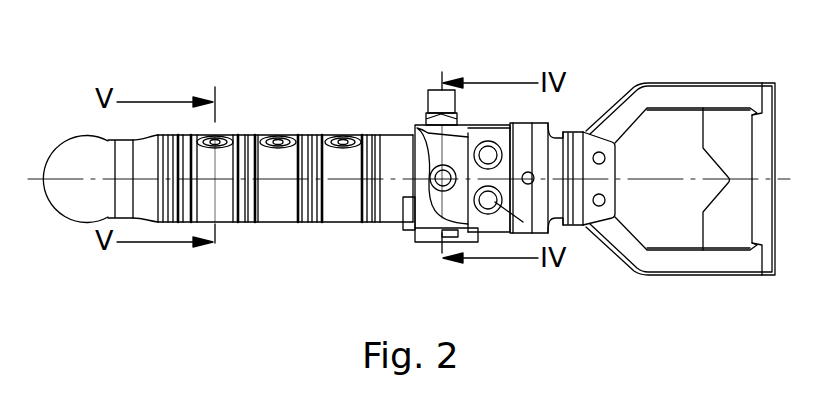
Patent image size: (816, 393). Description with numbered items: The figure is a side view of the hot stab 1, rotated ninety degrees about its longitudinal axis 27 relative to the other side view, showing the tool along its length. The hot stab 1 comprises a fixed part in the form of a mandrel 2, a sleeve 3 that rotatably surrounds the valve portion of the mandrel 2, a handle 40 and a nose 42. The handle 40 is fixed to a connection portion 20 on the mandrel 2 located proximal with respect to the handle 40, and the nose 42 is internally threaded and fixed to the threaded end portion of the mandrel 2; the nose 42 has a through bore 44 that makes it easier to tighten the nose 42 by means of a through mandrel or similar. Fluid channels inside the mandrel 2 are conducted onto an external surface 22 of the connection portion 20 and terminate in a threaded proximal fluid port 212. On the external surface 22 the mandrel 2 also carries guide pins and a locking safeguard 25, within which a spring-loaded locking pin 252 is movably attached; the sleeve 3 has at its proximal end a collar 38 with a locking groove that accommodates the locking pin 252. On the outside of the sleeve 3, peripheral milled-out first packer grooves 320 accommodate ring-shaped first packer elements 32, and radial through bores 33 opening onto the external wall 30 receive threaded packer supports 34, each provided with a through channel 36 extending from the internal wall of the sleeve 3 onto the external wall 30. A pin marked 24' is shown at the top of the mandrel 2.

The hot stab 1 is at (106, 124).
The nose 42 is at (60, 216).
The through bore 44 is at (88, 224).
The external wall 30 is at (227, 224).
The first packer element 32 is at (248, 224).
The first packer groove 320 is at (307, 224).
The radial through bore 33 is at (232, 136).
The packer support 34 is at (282, 136).
The through channel 36 is at (343, 136).
The sleeve 3 is at (383, 133).
The collar 38 is at (412, 131).
The mandrel 2 is at (472, 234).
The external surface 22 is at (479, 232).
The proximal fluid port 212 is at (497, 206).
The pin 24' is at (470, 86).
The locking safeguard 25 is at (420, 243).
The locking pin 252 is at (407, 234).
The connection portion 20 is at (545, 67).
The longitudinal axis 27 is at (643, 177).
The handle 40 is at (700, 275).